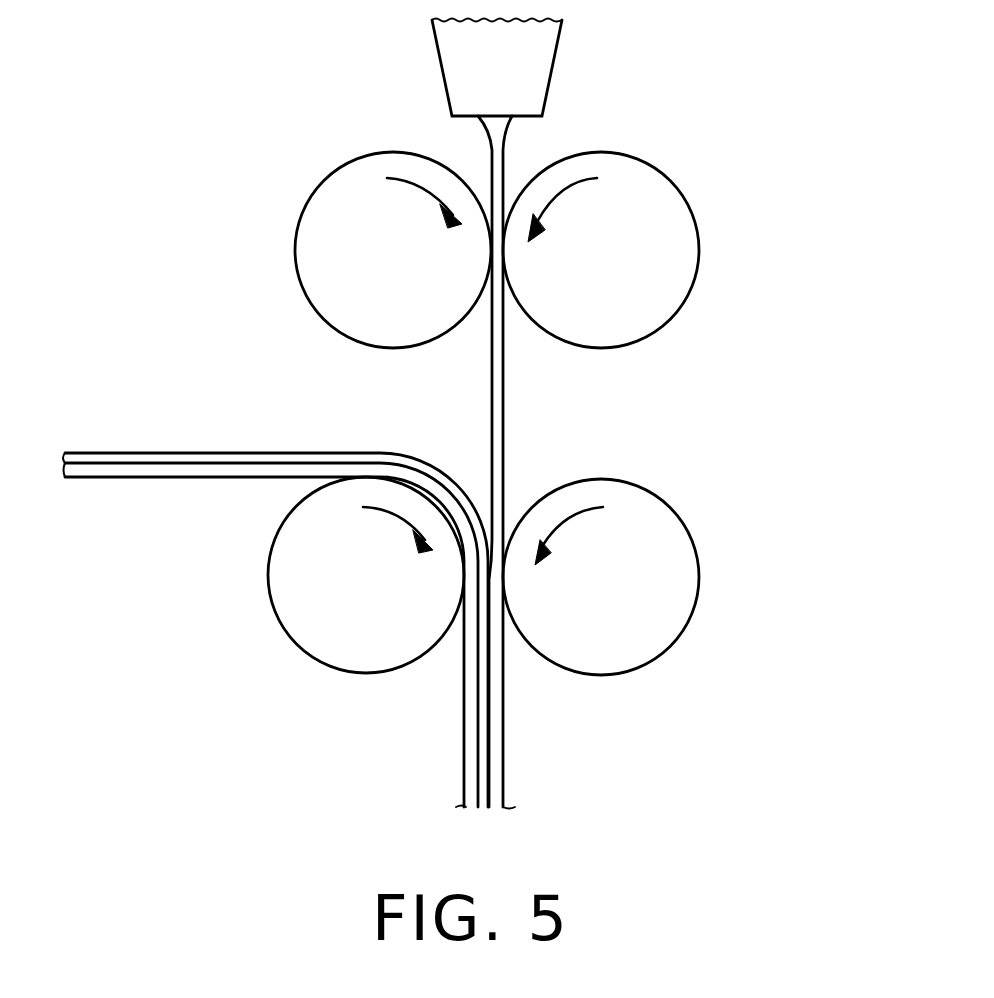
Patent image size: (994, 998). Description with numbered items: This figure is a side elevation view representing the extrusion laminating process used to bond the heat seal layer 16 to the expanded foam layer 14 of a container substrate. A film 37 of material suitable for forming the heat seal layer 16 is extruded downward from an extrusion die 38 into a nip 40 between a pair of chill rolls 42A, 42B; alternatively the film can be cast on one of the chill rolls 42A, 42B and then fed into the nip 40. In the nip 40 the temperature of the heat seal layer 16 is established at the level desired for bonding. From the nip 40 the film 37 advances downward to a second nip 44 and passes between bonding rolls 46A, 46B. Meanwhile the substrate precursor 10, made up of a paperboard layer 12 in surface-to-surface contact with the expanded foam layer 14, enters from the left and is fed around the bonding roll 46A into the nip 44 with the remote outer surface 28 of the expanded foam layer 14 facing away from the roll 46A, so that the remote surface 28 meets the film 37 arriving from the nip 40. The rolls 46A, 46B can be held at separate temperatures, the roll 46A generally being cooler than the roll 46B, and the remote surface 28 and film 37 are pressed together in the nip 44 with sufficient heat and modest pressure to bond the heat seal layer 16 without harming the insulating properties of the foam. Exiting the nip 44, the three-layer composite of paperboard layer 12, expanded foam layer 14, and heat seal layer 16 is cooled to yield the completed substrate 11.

The substrate precursor 10 is at (86, 452).
The substrate 11 is at (462, 790).
The paperboard layer 12 is at (125, 468).
The expanded foam layer 14 is at (132, 453).
The heat seal layer 16 is at (492, 752).
The remote outer surface 28 is at (208, 453).
The film 37 is at (504, 168).
The extrusion die 38 is at (552, 70).
The nip 40 is at (508, 200).
The chill roll 42A is at (296, 250).
The chill roll 42B is at (700, 250).
The nip 44 is at (508, 518).
The bonding roll 46A is at (268, 578).
The bonding roll 46B is at (699, 596).